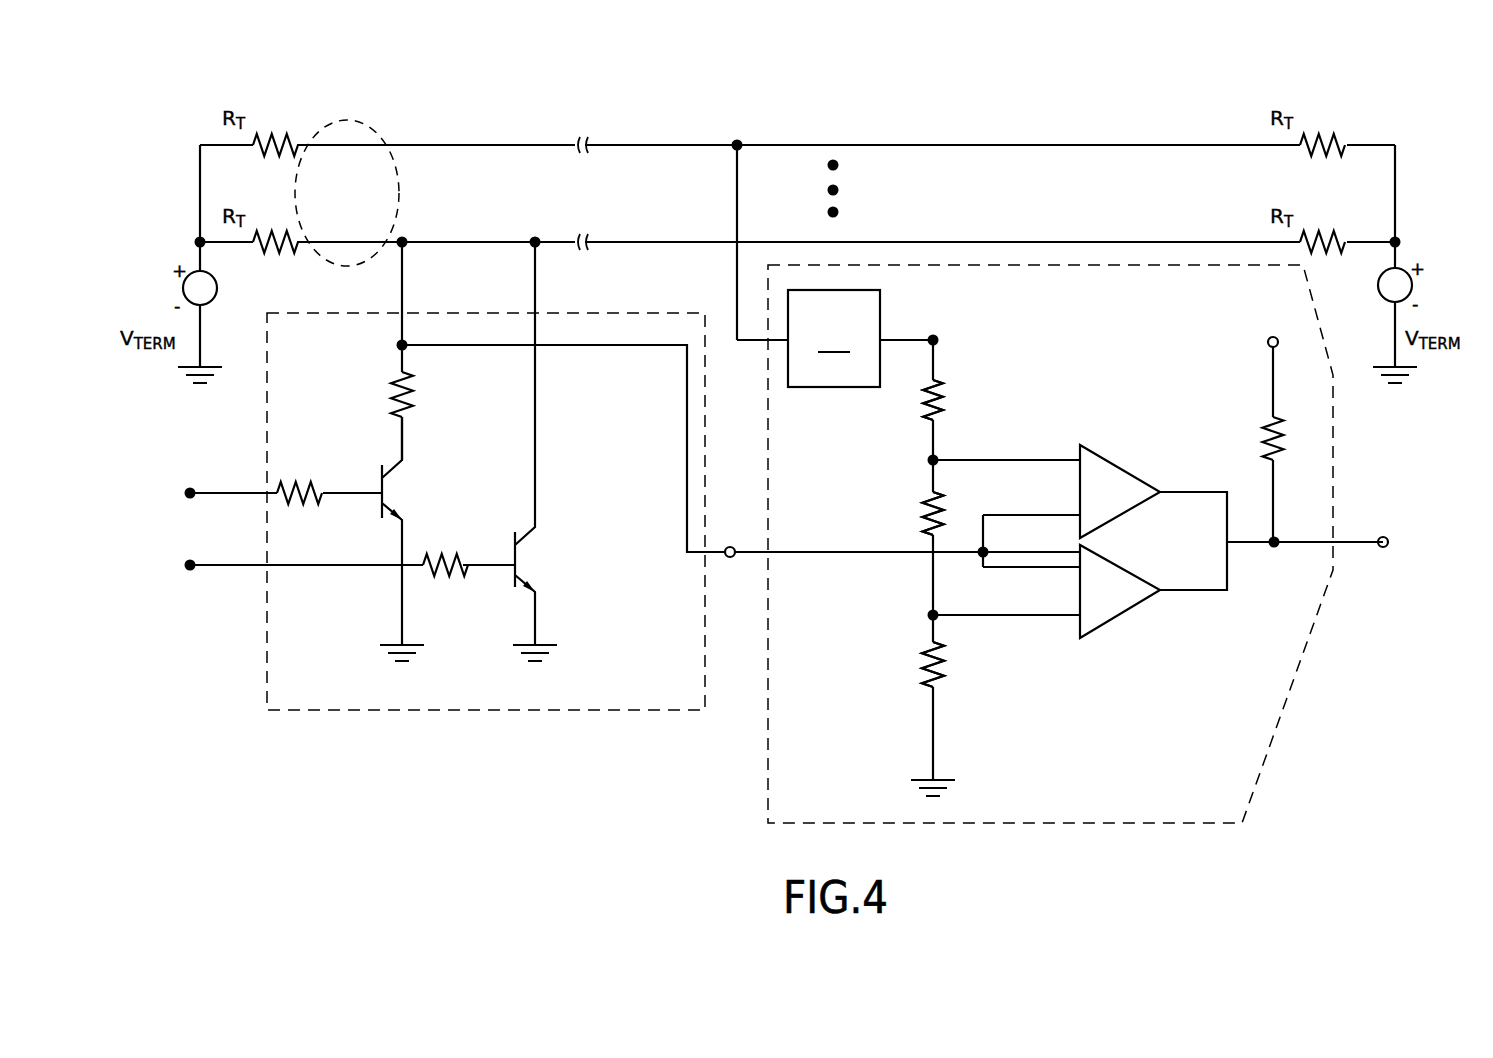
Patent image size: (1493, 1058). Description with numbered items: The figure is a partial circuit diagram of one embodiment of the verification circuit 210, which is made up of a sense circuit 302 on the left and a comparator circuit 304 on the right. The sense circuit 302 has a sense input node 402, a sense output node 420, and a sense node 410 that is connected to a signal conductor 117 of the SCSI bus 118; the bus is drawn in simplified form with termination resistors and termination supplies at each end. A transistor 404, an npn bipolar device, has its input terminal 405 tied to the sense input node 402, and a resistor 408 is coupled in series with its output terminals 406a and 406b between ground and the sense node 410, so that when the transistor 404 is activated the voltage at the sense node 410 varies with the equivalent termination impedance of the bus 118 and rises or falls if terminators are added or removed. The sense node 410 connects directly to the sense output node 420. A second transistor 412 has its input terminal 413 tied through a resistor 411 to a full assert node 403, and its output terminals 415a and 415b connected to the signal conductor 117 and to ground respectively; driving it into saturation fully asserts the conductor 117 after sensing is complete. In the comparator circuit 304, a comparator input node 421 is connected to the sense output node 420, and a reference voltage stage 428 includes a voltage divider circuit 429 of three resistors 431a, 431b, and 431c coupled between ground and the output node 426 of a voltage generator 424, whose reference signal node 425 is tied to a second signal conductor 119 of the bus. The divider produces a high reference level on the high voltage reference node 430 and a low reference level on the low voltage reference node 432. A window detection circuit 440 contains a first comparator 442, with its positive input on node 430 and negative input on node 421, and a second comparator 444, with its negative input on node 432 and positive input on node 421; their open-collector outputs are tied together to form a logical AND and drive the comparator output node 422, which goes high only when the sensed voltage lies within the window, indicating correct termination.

The signal conductor 117 is at (455, 243).
The SCSI bus 118 is at (372, 118).
The second signal conductor 119 is at (622, 137).
The verification circuit 210 is at (577, 750).
The sense circuit 302 is at (265, 655).
The comparator circuit 304 is at (766, 790).
The sense input node 402 is at (190, 493).
The full assert node 403 is at (190, 565).
The transistor 404 is at (395, 481).
The input terminal 405 is at (349, 490).
The output terminal 406a is at (398, 545).
The output terminal 406b is at (398, 445).
The resistor 408 is at (395, 383).
The sense node 410 is at (405, 345).
The resistor 411 is at (437, 590).
The second transistor 412 is at (540, 556).
The input terminal 413 is at (490, 568).
The output terminal 415a is at (540, 482).
The output terminal 415b is at (540, 614).
The sense output node 420 is at (727, 548).
The comparator input node 421 is at (740, 556).
The comparator output node 422 is at (1380, 538).
The voltage generator 424 is at (834, 338).
The reference signal node 425 is at (737, 290).
The output node 426 is at (938, 337).
The reference voltage stage 428 is at (920, 295).
The voltage divider circuit 429 is at (1030, 378).
The high voltage reference node 430 is at (930, 459).
The resistor 431a is at (929, 666).
The resistor 431b is at (928, 519).
The resistor 431c is at (958, 395).
The low voltage reference node 432 is at (932, 616).
The window detection circuit 440 is at (1174, 428).
The first comparator 442 is at (1138, 472).
The second comparator 444 is at (1128, 603).